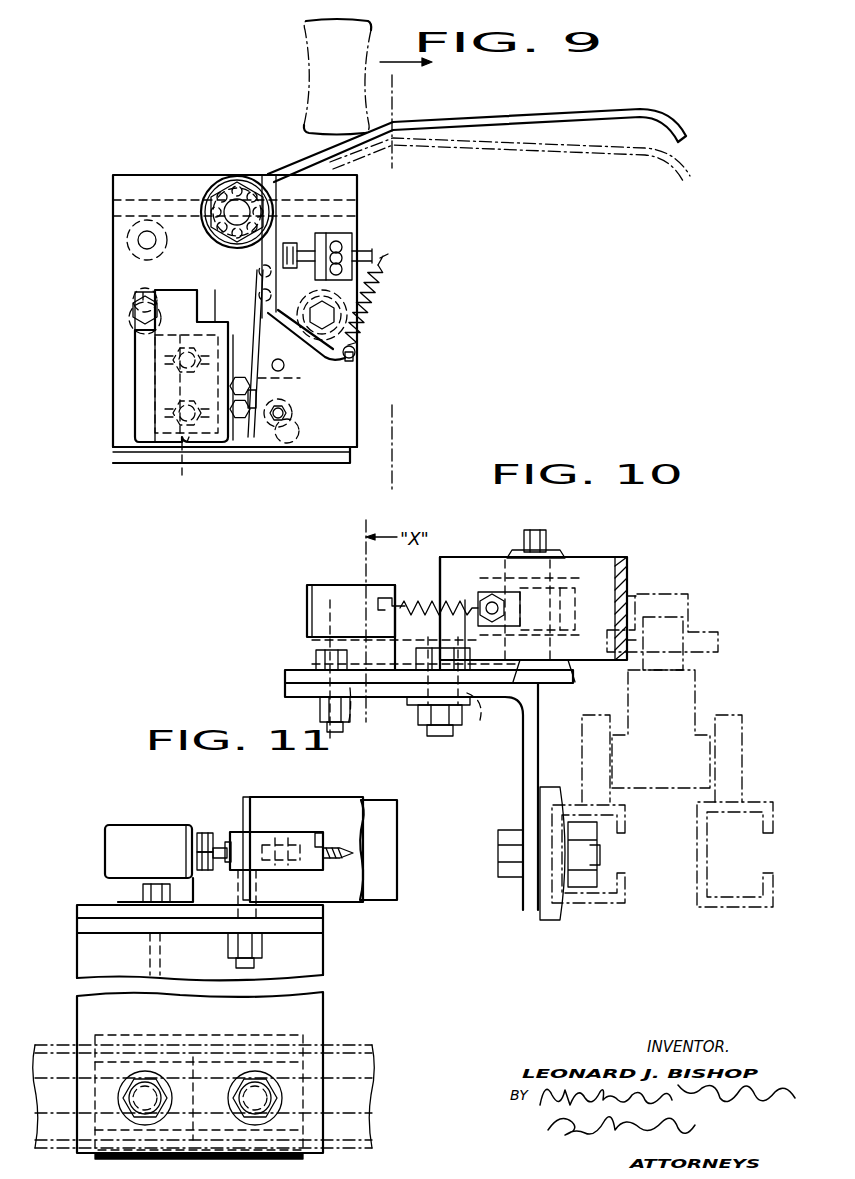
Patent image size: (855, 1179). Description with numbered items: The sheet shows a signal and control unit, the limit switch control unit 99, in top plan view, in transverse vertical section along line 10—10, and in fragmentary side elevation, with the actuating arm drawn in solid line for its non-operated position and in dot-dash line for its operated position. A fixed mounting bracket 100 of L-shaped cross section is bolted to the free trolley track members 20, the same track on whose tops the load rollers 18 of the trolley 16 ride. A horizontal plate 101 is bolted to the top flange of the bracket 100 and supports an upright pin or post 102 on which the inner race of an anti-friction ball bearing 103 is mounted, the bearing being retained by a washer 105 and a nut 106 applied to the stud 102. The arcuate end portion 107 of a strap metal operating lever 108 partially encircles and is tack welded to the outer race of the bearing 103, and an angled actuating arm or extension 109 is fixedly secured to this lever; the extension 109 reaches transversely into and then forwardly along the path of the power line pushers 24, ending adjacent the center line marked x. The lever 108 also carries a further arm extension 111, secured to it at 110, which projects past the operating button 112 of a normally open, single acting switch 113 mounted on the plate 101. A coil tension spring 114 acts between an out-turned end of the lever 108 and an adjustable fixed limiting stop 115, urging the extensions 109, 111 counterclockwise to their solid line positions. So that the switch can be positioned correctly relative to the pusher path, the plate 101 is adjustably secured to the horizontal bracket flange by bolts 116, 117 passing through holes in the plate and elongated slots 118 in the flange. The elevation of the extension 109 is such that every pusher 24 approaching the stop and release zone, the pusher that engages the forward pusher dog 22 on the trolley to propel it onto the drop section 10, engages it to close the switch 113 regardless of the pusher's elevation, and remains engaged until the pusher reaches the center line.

In FIG. 9, the drop section 10 is at (400, 87).
In FIG. 10, the trolley 16 is at (693, 708).
In FIG. 10, the forward load rollers 18 is at (590, 733).
In FIG. 9, the longitudinal track members 20 is at (313, 457).
In FIG. 10, the longitudinal track members 20 is at (697, 908).
In FIG. 11, the longitudinal track members 20 is at (363, 1052).
In FIG. 10, the forward pusher dog 22 is at (683, 662).
In FIG. 9, the pusher 24 is at (309, 82).
In FIG. 10, the pusher 24 is at (690, 613).
In FIG. 9, the limit switch control unit 99 is at (332, 252).
In FIG. 10, the limit switch control unit 99 is at (569, 579).
In FIG. 9, the mounting bracket 100 is at (128, 219).
In FIG. 10, the mounting bracket 100 is at (530, 740).
In FIG. 11, the mounting bracket 100 is at (315, 1008).
In FIG. 9, the horizontal plate 101 is at (350, 393).
In FIG. 10, the horizontal plate 101 is at (392, 677).
In FIG. 11, the horizontal plate 101 is at (317, 915).
In FIG. 9, the upright pin or post 102 is at (233, 199).
In FIG. 10, the upright pin or post 102 is at (534, 535).
In FIG. 9, the anti-friction ball bearing 103 is at (222, 243).
In FIG. 10, the anti-friction ball bearing 103 is at (574, 611).
In FIG. 10, the washer 105 is at (566, 578).
In FIG. 9, the nut 106 is at (243, 249).
In FIG. 10, the nut 106 is at (565, 556).
In FIG. 9, the arcuate end portion 107 is at (211, 232).
In FIG. 9, the operating lever 108 is at (288, 245).
In FIG. 10, the operating lever 108 is at (422, 597).
In FIG. 11, the operating lever 108 is at (270, 833).
In FIG. 9, the angled actuating arm or extension 109 is at (520, 120).
In FIG. 10, the angled actuating arm or extension 109 is at (626, 598).
In FIG. 11, the angled actuating arm or extension 109 is at (343, 808).
In FIG. 9, the securing point 110 is at (273, 292).
In FIG. 9, the arm extension 111 is at (293, 384).
In FIG. 9, the operating button 112 is at (250, 440).
In FIG. 11, the operating button 112 is at (226, 842).
In FIG. 9, the switch 113 is at (145, 407).
In FIG. 10, the switch 113 is at (328, 587).
In FIG. 11, the switch 113 is at (168, 832).
In FIG. 9, the coil tension spring 114 is at (370, 319).
In FIG. 11, the coil tension spring 114 is at (332, 860).
In FIG. 9, the adjustable fixed limiting stop 115 is at (298, 253).
In FIG. 11, the adjustable fixed limiting stop 115 is at (282, 846).
In FIG. 9, the bolt 116 is at (131, 322).
In FIG. 10, the bolt 116 is at (437, 727).
In FIG. 11, the bolt 116 is at (143, 893).
In FIG. 9, the bolt 117 is at (292, 412).
In FIG. 10, the bolt 117 is at (316, 655).
In FIG. 9, the elongated slots 118 is at (128, 292).
In FIG. 10, the elongated slots 118 is at (423, 717).